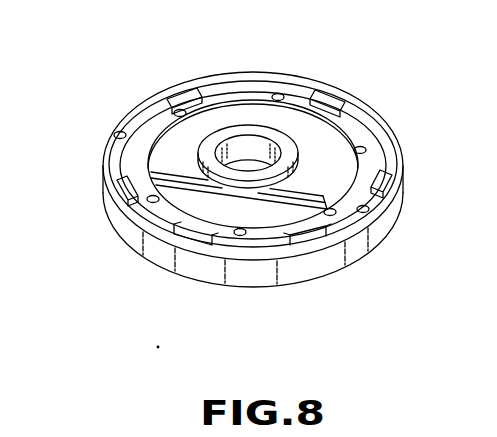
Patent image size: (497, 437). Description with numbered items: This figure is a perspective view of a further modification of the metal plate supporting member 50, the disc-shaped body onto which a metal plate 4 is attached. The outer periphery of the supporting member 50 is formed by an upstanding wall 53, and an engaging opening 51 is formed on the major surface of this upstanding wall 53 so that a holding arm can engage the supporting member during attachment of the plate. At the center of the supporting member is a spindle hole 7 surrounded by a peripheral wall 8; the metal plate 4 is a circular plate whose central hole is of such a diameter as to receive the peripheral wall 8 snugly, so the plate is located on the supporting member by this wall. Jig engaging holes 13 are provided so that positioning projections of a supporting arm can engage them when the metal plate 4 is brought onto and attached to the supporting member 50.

The metal plate 4 is at (317, 200).
The spindle hole 7 is at (250, 150).
The peripheral wall 8 is at (285, 145).
The jig engaging holes 13 is at (150, 203).
The metal plate supporting member 50 is at (250, 276).
The engaging opening 51 is at (114, 131).
The upstanding wall 53 is at (385, 130).